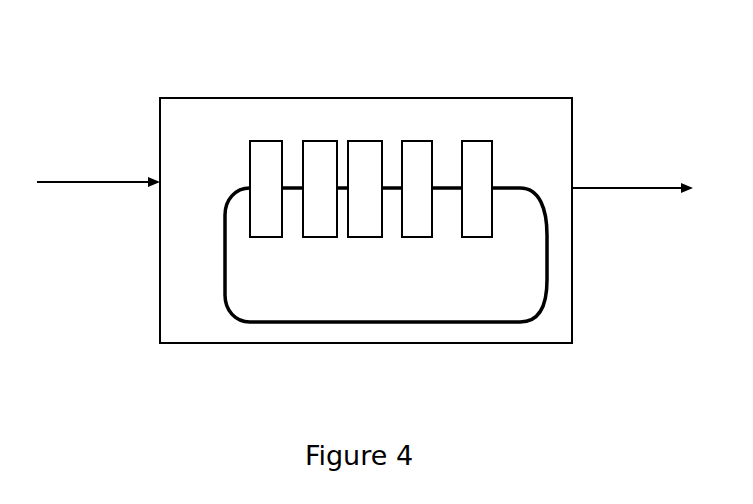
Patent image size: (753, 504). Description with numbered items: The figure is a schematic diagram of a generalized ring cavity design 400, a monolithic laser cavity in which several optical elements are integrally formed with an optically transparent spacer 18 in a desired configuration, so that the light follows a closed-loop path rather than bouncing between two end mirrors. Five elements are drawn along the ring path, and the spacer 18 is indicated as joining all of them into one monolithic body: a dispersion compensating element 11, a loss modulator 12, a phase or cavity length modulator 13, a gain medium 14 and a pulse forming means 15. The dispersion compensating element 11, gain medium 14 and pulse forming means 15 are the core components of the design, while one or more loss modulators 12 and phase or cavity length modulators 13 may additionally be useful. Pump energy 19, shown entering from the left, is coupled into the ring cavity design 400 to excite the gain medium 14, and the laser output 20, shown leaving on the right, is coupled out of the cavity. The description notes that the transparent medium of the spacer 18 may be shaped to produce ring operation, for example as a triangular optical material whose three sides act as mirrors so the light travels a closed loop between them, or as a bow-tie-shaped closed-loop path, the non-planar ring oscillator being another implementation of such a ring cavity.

The ring cavity design 400 is at (602, 70).
The dispersion compensating element 11 is at (265, 237).
The loss modulator 12 is at (318, 237).
The phase or cavity length modulator 13 is at (365, 237).
The gain medium 14 is at (416, 237).
The pulse forming means 15 is at (477, 237).
The optically transparent spacer 18 is at (223, 205).
The pump energy 19 is at (98, 164).
The laser output 20 is at (632, 171).